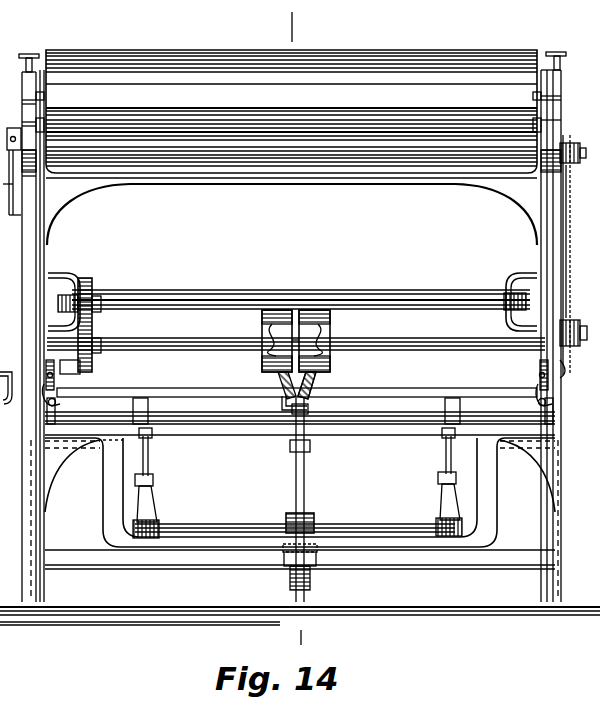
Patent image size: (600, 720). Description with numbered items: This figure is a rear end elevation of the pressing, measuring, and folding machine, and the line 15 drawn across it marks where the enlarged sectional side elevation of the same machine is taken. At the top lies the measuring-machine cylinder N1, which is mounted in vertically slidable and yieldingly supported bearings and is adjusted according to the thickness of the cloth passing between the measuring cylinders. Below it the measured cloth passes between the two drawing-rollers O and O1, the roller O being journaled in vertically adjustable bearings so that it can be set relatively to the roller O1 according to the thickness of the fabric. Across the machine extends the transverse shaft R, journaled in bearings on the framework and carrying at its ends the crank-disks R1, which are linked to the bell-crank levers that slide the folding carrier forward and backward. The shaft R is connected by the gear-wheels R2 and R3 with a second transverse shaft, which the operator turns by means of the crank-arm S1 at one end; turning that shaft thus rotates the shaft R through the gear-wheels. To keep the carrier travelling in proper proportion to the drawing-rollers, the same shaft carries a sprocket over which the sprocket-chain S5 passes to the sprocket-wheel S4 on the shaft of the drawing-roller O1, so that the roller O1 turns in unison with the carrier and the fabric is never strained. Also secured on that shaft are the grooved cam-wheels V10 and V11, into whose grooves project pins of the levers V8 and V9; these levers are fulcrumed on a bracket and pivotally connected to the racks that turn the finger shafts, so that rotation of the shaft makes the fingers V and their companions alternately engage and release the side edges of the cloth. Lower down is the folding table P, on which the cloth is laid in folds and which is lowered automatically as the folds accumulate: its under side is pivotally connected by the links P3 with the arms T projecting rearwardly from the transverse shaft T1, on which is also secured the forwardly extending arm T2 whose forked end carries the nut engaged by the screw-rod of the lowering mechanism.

The measuring-machine cylinder N1 is at (212, 66).
The drawing-roller O is at (326, 118).
The drawing-roller O1 is at (362, 152).
The section line 15 is at (292, 323).
The shaft R is at (218, 300).
The crank-disk R1 is at (66, 284).
The gear-wheel R2 is at (93, 280).
The gear-wheel R3 is at (92, 366).
The crank-arm S1 is at (420, 350).
The cam-wheel V11 is at (268, 320).
The cam-wheel V10 is at (328, 320).
The lever V9 is at (260, 380).
The lever V8 is at (318, 382).
The table P is at (158, 398).
The link P3 is at (148, 466).
The arm T is at (152, 512).
The transverse shaft T1 is at (375, 508).
The arm T2 is at (286, 522).
The fingers V is at (306, 494).
The sprocket-wheel S4 is at (568, 160).
The sprocket-chain S5 is at (571, 256).